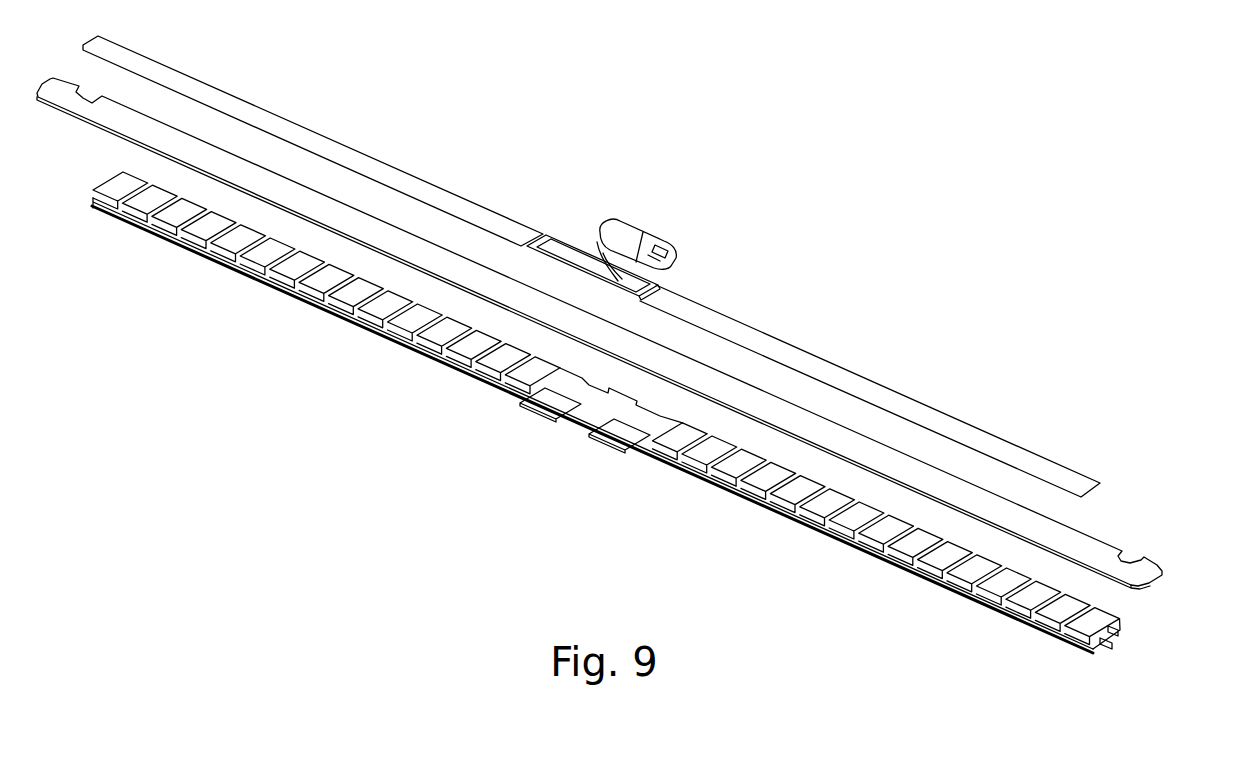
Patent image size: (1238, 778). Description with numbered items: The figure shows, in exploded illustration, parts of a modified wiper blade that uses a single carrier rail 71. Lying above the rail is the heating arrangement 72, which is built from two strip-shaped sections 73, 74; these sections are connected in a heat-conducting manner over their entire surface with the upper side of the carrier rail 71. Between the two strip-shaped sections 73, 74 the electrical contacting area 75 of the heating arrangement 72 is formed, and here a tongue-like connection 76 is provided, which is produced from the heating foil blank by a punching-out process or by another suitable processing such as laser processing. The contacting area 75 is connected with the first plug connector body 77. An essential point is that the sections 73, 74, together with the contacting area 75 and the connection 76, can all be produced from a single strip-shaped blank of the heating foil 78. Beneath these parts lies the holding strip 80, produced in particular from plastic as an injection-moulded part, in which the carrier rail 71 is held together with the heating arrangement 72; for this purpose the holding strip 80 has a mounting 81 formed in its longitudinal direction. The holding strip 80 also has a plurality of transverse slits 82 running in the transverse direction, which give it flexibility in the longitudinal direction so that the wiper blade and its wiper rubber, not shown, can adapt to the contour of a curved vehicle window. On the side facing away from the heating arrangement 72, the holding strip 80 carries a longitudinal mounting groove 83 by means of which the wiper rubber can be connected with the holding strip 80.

The carrier rail 71 is at (1093, 545).
The heating arrangement 72 is at (591, 266).
The strip-shaped section 73 is at (352, 163).
The strip-shaped section 74 is at (766, 347).
The electrical contacting area 75 is at (548, 234).
The tongue-like connection 76 is at (589, 244).
The first plug connector body 77 is at (655, 228).
The heating foil 78 is at (591, 266).
The holding strip 80 is at (655, 453).
The mounting 81 is at (1128, 622).
The transverse slits 82 is at (890, 560).
The mounting groove 83 is at (1108, 655).